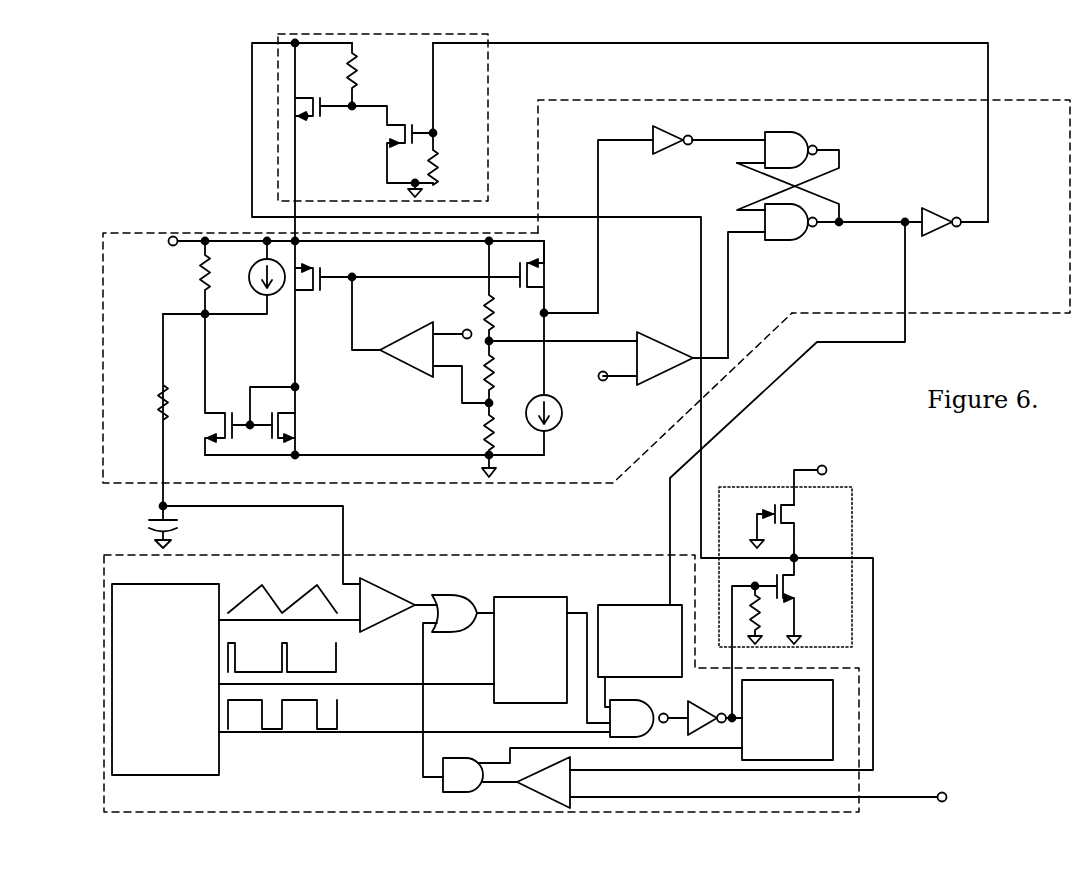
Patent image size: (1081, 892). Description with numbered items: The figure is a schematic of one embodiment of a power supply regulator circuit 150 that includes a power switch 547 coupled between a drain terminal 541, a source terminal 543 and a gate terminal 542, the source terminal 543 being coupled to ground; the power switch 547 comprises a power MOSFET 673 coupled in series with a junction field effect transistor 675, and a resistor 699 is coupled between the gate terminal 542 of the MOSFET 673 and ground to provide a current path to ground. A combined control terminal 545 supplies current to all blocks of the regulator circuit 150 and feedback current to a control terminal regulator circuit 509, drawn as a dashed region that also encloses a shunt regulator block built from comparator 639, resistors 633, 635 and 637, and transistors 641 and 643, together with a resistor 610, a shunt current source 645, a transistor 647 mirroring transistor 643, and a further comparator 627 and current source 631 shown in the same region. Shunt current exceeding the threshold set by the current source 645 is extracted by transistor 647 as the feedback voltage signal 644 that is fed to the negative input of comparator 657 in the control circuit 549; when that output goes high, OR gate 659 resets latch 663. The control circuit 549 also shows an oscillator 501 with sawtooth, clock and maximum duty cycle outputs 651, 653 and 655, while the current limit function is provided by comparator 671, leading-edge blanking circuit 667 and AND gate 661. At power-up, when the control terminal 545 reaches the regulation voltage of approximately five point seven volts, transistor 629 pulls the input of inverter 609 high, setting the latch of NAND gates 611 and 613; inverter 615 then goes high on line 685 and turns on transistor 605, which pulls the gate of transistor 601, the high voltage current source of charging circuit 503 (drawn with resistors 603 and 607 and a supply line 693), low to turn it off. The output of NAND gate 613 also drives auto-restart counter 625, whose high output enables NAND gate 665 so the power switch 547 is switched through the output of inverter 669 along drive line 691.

The power supply regulator circuit 150 is at (1034, 564).
The oscillator 501 is at (230, 692).
The charging circuit 503 is at (405, 117).
The control terminal regulator circuit 509 is at (804, 191).
The drain terminal 541 is at (796, 554).
The gate terminal 542 is at (748, 577).
The source terminal 543 is at (834, 632).
The control terminal 545 is at (447, 347).
The power switch 547 is at (802, 471).
The control circuit 549 is at (481, 672).
The transistor 601 is at (323, 142).
The resistor 603 is at (370, 76).
The transistor 605 is at (394, 151).
The resistor 607 is at (451, 114).
The inverter 609 is at (681, 219).
The resistor 610 is at (186, 279).
The NAND gate 611 is at (788, 160).
The NAND gate 613 is at (807, 260).
The inverter 615 is at (955, 234).
The auto-restart counter 625 is at (640, 643).
The comparator 627 is at (662, 369).
The transistor 629 is at (559, 279).
The current source 631 is at (561, 384).
The resistor 633 is at (560, 293).
The resistor 635 is at (506, 374).
The resistor 637 is at (505, 440).
The comparator 639 is at (434, 355).
The transistor 641 is at (407, 348).
The transistor 643 is at (374, 421).
The feedback voltage signal 644 is at (343, 540).
The current source 645 is at (224, 277).
The transistor 647 is at (250, 384).
The sawtooth output 651 is at (246, 604).
The clock output 653 is at (331, 659).
The maximum duty cycle output 655 is at (388, 727).
The comparator 657 is at (398, 618).
The OR gate 659 is at (458, 675).
The AND gate 661 is at (480, 786).
The latch 663 is at (552, 648).
The NAND gate 665 is at (649, 718).
The leading-edge blanking circuit 667 is at (675, 664).
The inverter 669 is at (715, 707).
The comparator 671 is at (754, 786).
The power MOSFET 673 is at (788, 637).
The junction field effect transistor 675 is at (797, 530).
The latch output signal line 685 is at (997, 76).
The drive signal line 691 is at (907, 320).
The supply line 693 is at (503, 299).
The resistor 699 is at (771, 615).